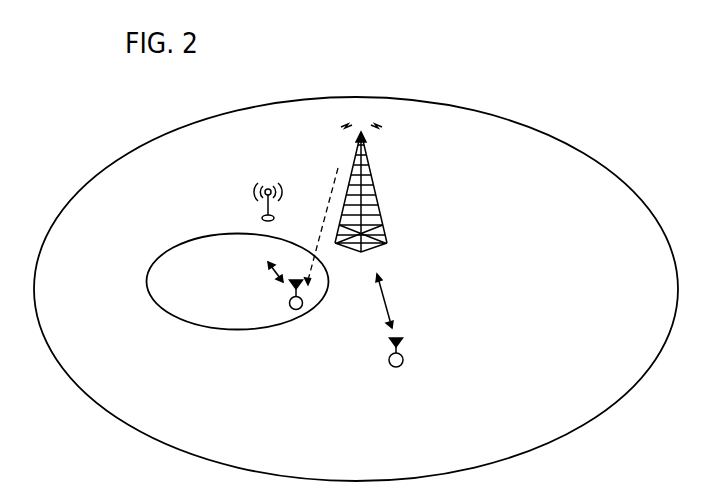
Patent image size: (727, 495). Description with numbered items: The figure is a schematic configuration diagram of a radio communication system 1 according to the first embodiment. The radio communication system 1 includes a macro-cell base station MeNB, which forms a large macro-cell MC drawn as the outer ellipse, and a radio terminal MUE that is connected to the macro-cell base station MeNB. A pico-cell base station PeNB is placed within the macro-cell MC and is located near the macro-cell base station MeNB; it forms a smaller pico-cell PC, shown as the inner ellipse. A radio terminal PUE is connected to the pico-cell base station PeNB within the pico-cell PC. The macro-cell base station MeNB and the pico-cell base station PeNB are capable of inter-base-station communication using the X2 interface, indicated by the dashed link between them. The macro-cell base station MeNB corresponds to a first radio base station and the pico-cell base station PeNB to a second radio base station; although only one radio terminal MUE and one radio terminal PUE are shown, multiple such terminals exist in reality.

The radio communication system 1 is at (383, 68).
The macro-cell MC is at (110, 165).
The pico-cell PC is at (167, 248).
The pico-cell base station PeNB is at (261, 224).
The macro-cell base station MeNB is at (370, 167).
The radio terminal PUE is at (289, 303).
The radio terminal MUE is at (396, 367).